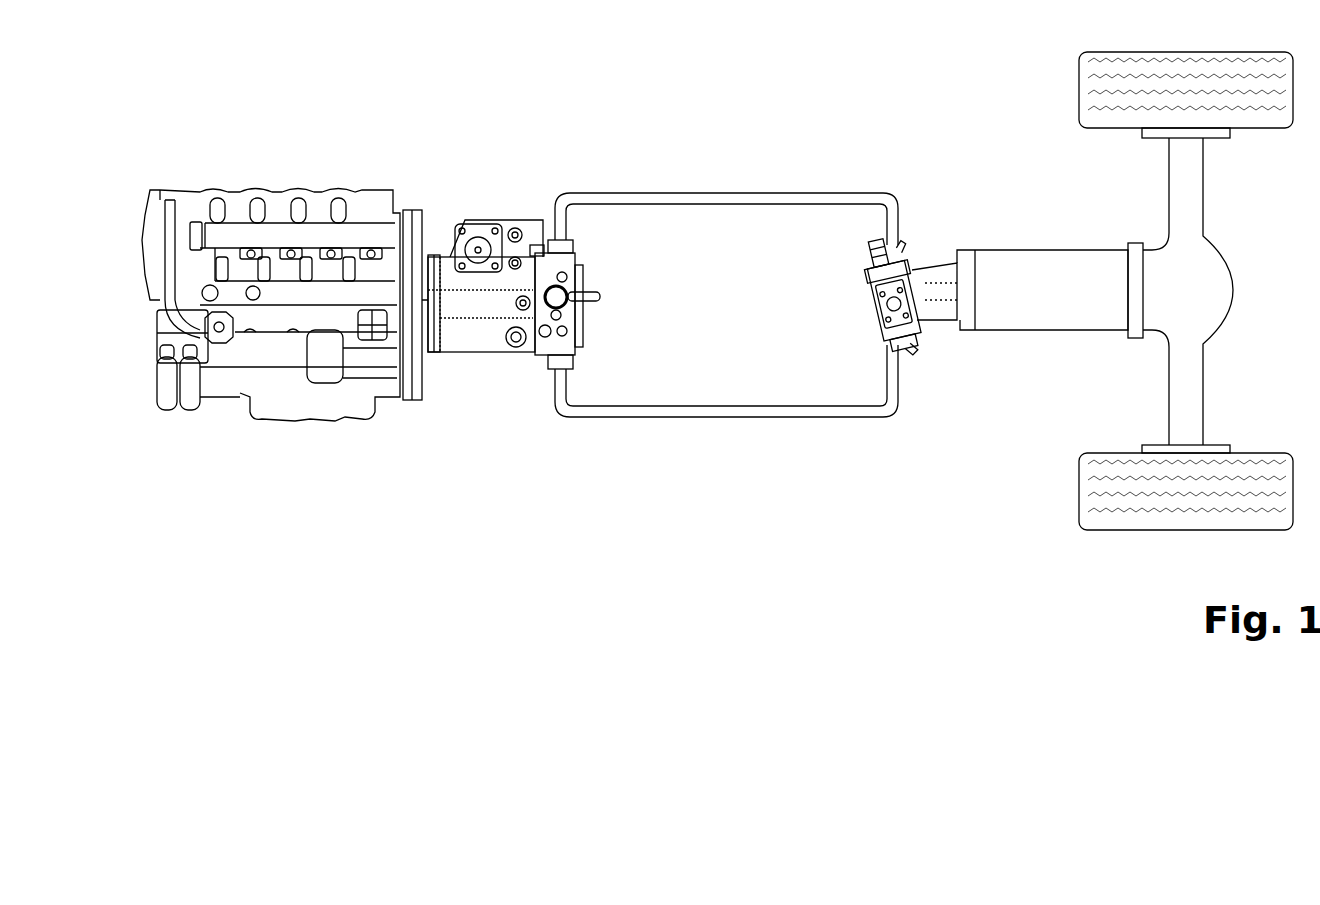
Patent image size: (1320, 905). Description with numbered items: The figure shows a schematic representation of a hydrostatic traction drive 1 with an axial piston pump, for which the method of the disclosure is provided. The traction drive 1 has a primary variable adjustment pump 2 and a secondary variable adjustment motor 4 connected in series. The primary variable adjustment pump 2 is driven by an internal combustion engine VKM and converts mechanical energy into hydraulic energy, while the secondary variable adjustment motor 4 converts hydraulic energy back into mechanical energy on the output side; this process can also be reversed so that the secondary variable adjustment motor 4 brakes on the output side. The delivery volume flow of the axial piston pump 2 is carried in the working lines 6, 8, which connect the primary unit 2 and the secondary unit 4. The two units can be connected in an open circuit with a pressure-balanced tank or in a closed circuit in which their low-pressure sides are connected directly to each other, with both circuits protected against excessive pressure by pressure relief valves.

The traction drive 1 is at (607, 442).
The primary variable adjustment pump 2 is at (488, 345).
The secondary variable adjustment motor 4 is at (940, 322).
The working line 6 is at (640, 196).
The working line 8 is at (718, 418).
The internal combustion engine VKM is at (278, 200).